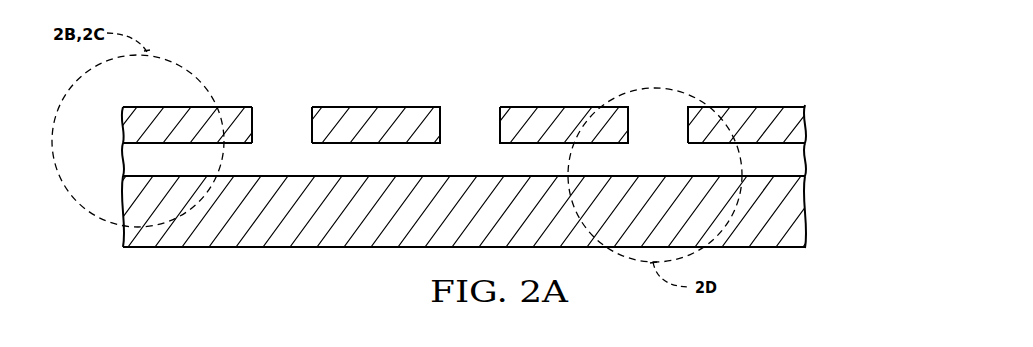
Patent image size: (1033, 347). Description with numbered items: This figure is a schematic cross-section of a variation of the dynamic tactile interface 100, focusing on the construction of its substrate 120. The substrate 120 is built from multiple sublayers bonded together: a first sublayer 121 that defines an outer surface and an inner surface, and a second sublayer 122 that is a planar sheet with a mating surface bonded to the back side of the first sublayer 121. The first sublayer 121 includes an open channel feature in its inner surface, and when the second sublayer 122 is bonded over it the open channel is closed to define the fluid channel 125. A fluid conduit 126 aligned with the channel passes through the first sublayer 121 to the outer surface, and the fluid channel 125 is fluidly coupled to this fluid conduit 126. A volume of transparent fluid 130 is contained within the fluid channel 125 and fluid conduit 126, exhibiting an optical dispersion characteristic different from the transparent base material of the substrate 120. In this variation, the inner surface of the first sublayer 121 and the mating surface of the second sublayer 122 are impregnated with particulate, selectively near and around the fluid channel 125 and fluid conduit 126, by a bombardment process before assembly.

The dynamic tactile interface 100 is at (731, 46).
The substrate 120 is at (810, 105).
The first sublayer 121 is at (118, 107).
The second sublayer 122 is at (115, 177).
The fluid channel 125 is at (469, 156).
The fluid conduit 126 is at (290, 103).
The volume of transparent fluid 130 is at (235, 158).